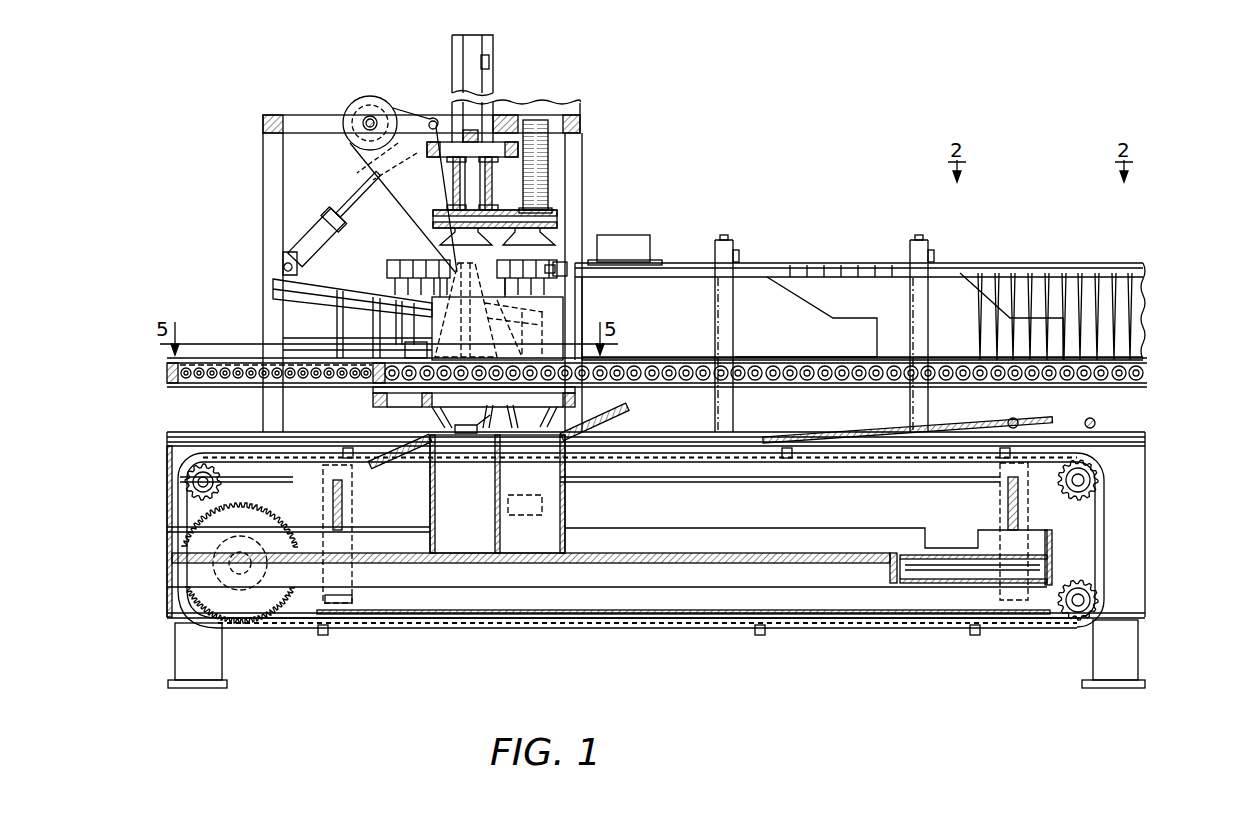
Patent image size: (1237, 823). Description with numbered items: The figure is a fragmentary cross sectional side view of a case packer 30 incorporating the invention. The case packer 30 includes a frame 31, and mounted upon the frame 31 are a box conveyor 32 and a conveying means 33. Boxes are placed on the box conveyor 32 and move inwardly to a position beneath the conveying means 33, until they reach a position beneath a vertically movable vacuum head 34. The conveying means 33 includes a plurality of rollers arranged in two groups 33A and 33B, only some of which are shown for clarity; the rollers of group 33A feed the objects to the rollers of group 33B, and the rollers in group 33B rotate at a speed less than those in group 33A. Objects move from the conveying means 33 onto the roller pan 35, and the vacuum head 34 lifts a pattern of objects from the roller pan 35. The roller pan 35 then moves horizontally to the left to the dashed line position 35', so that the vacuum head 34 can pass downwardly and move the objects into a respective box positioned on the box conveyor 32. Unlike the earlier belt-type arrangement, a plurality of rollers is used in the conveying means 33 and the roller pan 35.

The case packer 30 is at (915, 110).
The frame 31 is at (1128, 517).
The box conveyor 32 is at (742, 553).
The conveying means 33 is at (897, 323).
The roller group 33A is at (1162, 404).
The roller group 33B is at (1052, 392).
The vacuum head 34 is at (573, 82).
The roller pan 35 is at (647, 324).
The dashed line position of roller pan 35' is at (229, 406).